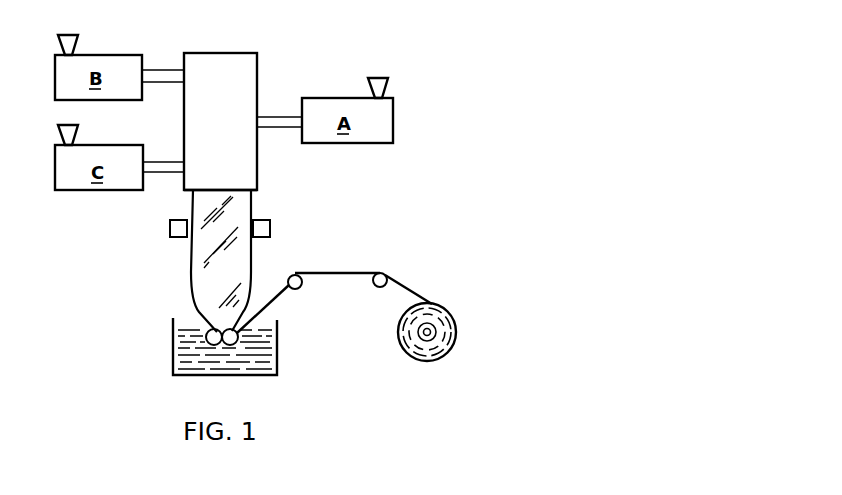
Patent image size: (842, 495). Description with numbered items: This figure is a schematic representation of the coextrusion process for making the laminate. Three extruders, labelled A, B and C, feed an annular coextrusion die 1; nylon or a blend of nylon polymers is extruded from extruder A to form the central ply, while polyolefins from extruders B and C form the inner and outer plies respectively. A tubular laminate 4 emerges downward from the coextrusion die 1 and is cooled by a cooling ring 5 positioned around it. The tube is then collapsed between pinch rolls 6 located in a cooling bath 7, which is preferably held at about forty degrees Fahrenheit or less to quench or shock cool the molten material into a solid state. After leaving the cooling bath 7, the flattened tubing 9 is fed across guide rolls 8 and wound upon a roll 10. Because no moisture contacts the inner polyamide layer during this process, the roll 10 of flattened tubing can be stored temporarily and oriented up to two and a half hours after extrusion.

The coextrusion die 1 is at (224, 133).
The tubular laminate 4 is at (253, 204).
The cooling ring 5 is at (270, 224).
The pinch rolls 6 is at (209, 330).
The cooling bath 7 is at (173, 353).
The guide rolls 8 is at (384, 272).
The flattened tubing 9 is at (327, 274).
The roll 10 is at (456, 332).